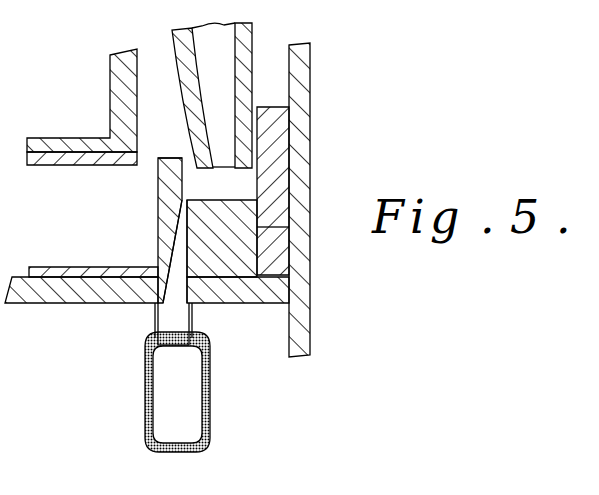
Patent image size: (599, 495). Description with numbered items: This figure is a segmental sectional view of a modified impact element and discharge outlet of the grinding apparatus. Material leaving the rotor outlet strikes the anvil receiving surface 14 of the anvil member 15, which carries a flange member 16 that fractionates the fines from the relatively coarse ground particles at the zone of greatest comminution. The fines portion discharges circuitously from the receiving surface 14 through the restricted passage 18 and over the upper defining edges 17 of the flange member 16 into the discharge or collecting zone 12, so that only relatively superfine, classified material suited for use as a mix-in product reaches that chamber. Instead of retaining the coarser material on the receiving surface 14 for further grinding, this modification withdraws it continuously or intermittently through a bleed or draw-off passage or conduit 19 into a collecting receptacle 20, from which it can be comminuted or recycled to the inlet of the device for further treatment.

The discharge or collecting zone 12 is at (81, 176).
The anvil receiving surface 14 is at (230, 183).
The anvil member 15 is at (228, 255).
The flange member 16 is at (158, 192).
The upper defining edge of flange member 17 is at (175, 157).
The restricted passage 18 is at (190, 170).
The bleed or draw-off passage or conduit 19 is at (184, 258).
The collecting receptacle 20 is at (163, 402).